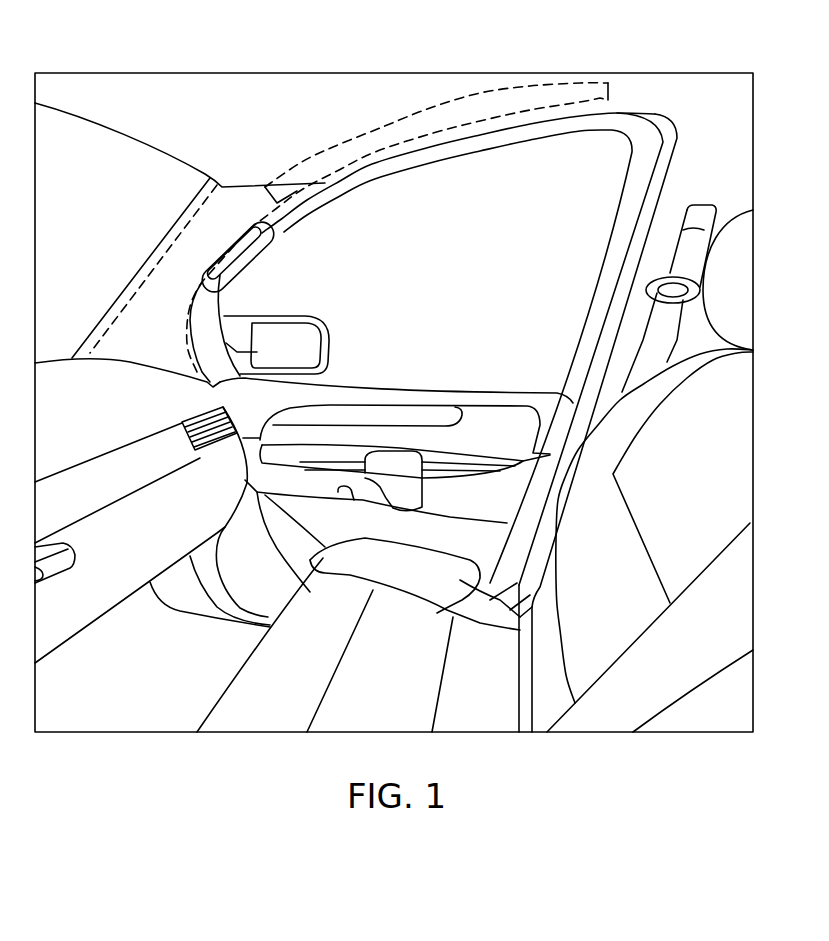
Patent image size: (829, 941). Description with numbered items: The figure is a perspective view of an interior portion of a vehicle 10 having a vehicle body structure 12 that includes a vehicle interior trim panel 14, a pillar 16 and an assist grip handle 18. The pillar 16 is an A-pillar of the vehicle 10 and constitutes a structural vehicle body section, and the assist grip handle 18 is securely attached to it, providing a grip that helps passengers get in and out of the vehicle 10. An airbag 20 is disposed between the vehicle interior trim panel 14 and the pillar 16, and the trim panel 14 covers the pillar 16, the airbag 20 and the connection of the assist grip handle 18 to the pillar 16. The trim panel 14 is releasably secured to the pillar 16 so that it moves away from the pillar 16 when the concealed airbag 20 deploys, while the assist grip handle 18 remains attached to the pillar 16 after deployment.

The vehicle 10 is at (699, 73).
The vehicle body structure 12 is at (290, 234).
The vehicle interior trim panel 14 is at (303, 207).
The pillar 16 is at (193, 208).
The assist grip handle 18 is at (253, 277).
The airbag 20 is at (333, 147).